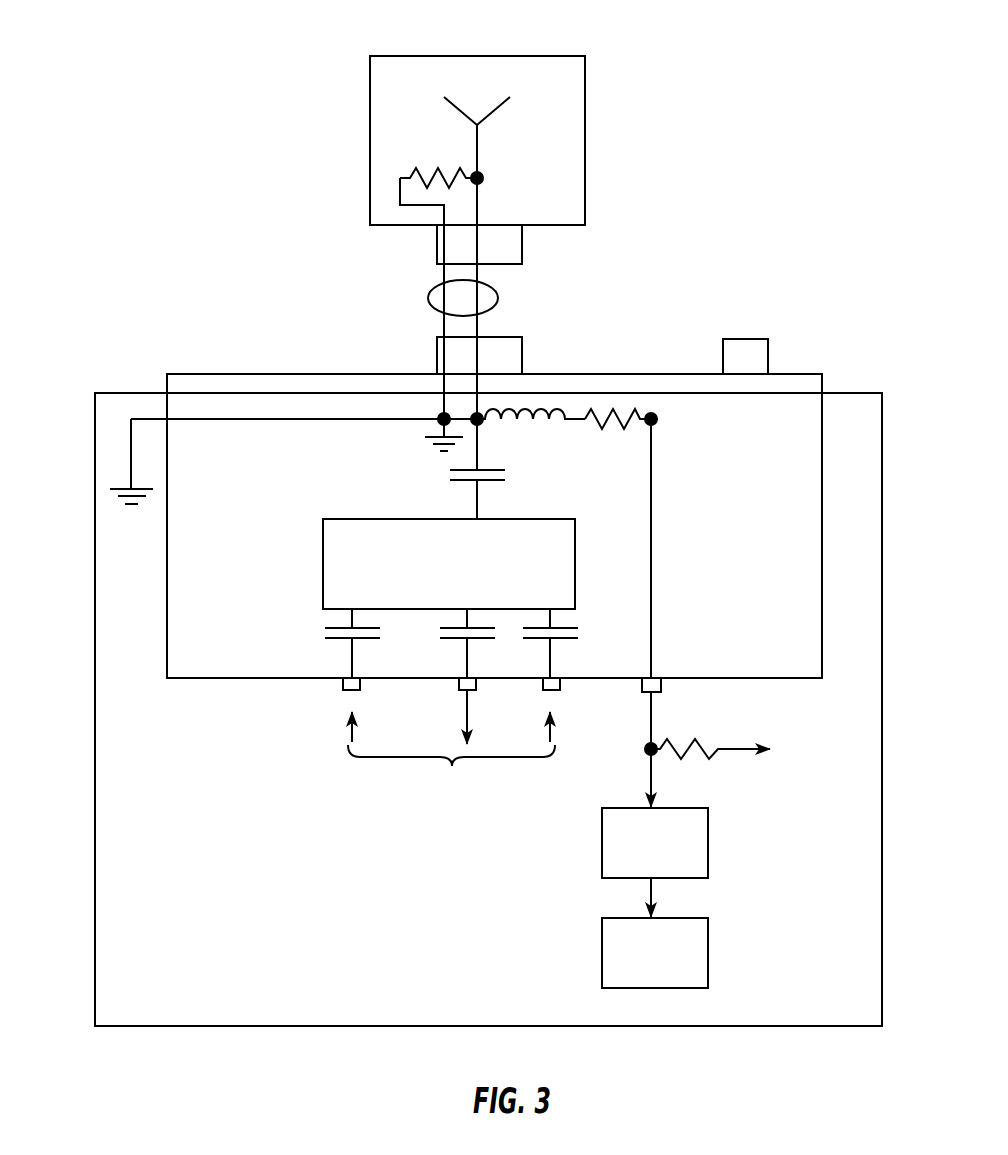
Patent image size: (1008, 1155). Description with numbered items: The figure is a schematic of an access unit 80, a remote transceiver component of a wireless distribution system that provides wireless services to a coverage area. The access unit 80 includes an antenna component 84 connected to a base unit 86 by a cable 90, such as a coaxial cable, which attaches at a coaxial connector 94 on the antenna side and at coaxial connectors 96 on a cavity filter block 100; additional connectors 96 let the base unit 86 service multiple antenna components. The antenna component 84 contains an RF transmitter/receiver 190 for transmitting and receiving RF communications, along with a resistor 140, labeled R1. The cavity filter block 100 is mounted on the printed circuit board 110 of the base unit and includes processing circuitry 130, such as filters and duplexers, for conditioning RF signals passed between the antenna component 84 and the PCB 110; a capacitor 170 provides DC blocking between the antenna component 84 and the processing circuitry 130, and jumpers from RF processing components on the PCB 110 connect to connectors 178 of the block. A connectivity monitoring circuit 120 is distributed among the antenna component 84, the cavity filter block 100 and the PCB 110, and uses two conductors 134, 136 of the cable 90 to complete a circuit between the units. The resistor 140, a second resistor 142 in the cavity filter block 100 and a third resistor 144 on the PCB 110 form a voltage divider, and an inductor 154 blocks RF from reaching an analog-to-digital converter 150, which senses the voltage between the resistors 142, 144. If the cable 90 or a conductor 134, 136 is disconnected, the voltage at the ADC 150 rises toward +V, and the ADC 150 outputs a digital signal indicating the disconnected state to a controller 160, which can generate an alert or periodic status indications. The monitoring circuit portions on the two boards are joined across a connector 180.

The access unit 80 is at (225, 128).
The antenna component 84 is at (612, 120).
The base unit 86 is at (73, 607).
The cable 90 is at (503, 298).
The coaxial connector 94 is at (522, 245).
The coaxial connectors 96 is at (662, 344).
The cavity filter block 100 is at (223, 472).
The base unit printed circuit board 110 is at (183, 961).
The connectivity monitoring circuit 120 is at (658, 308).
The processing circuitry 130 is at (466, 582).
The conductor 134 is at (444, 275).
The conductor 136 is at (477, 318).
The resistor 140 is at (429, 270).
The resistor R1 is at (395, 147).
The second resistor 142 is at (622, 412).
The third resistor 144 is at (695, 752).
The analog-to-digital converter 150 is at (638, 872).
The inductor 154 is at (523, 412).
The controller 160 is at (638, 981).
The capacitor 170 is at (498, 483).
The connectors 178 is at (343, 686).
The connector 180 is at (661, 688).
The RF transmitter/receiver 190 is at (515, 122).